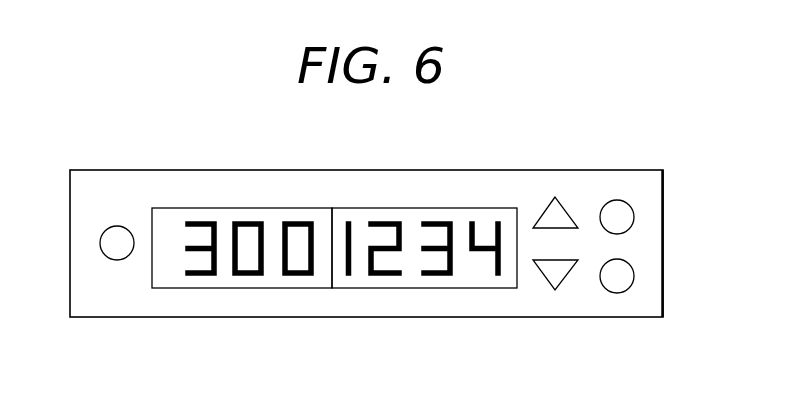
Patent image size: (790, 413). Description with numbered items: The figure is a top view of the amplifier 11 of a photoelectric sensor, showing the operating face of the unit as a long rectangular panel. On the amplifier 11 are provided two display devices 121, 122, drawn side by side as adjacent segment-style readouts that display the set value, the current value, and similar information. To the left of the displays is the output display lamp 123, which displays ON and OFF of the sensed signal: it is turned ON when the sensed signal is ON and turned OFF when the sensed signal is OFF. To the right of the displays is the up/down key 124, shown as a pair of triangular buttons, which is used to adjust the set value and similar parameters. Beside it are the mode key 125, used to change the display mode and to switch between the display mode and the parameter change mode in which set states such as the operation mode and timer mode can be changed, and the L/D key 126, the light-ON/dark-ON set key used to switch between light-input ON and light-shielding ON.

The amplifier 11 is at (170, 170).
The display device 121 is at (267, 208).
The display device 122 is at (420, 208).
The output display lamp 123 is at (116, 226).
The up/down key 124 is at (568, 195).
The mode key 125 is at (632, 202).
The L/D key 126 is at (623, 291).